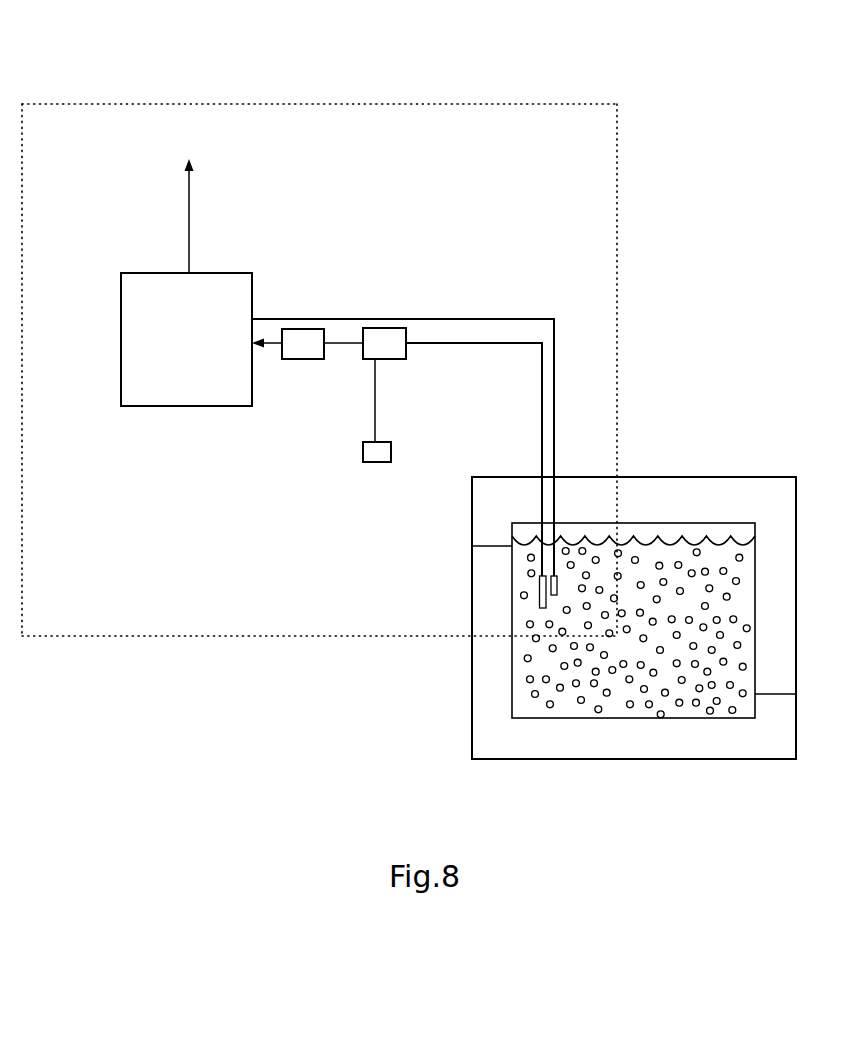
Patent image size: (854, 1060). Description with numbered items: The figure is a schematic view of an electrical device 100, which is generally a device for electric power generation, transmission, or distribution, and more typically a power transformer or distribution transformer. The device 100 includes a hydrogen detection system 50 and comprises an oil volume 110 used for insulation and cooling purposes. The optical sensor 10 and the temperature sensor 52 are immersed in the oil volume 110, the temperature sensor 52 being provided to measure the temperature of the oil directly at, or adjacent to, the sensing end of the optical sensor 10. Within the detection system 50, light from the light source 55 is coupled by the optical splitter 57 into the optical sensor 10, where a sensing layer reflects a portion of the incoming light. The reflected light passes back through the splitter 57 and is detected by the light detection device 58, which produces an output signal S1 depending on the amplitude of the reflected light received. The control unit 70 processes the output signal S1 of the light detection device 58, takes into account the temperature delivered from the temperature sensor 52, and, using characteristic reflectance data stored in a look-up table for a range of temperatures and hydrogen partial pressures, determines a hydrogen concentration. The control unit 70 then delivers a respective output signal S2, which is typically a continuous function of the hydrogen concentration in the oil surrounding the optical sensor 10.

The electrical device 100 is at (755, 45).
The detection system 50 is at (275, 103).
The control unit 70 is at (148, 343).
The light detection device 58 is at (302, 338).
The optical splitter 57 is at (368, 352).
The light source 55 is at (378, 457).
The optical sensor 10 is at (540, 593).
The temperature sensor 52 is at (558, 582).
The oil volume 110 is at (543, 688).
The output signal S1 is at (268, 338).
The output signal S2 is at (193, 217).